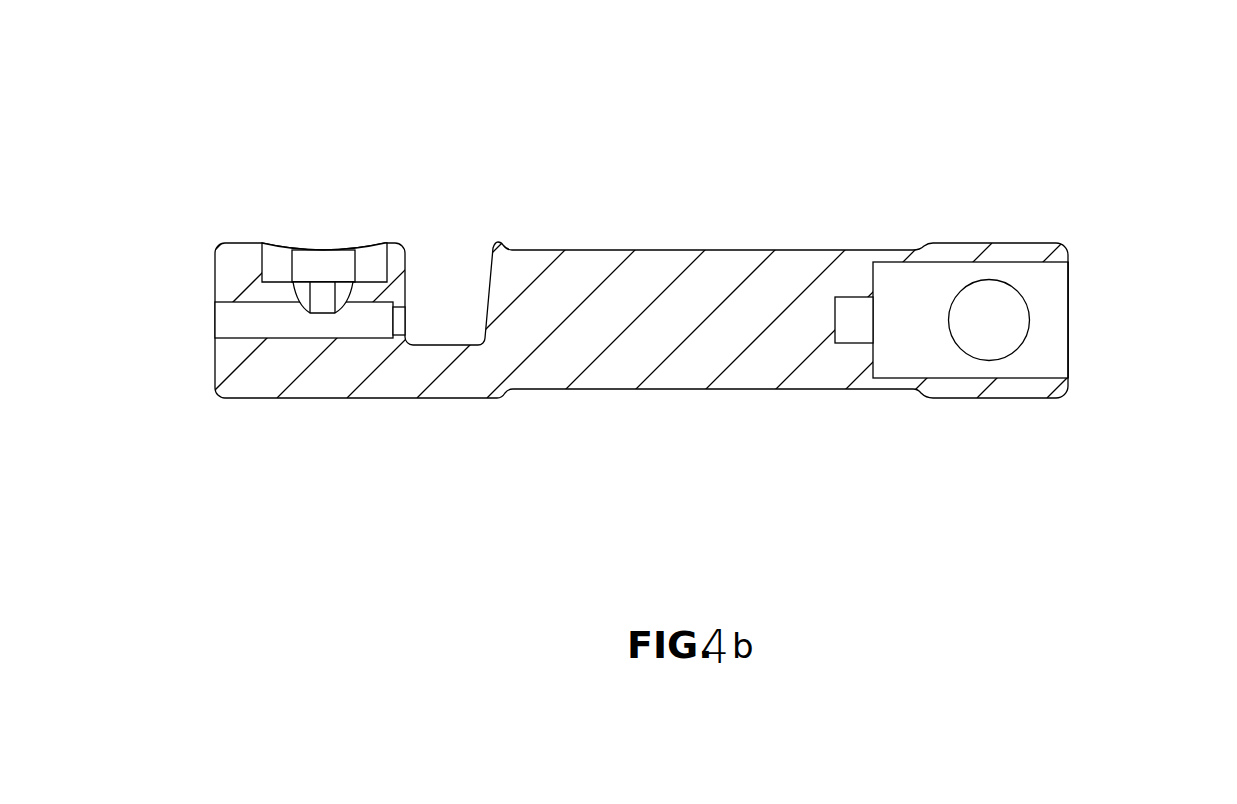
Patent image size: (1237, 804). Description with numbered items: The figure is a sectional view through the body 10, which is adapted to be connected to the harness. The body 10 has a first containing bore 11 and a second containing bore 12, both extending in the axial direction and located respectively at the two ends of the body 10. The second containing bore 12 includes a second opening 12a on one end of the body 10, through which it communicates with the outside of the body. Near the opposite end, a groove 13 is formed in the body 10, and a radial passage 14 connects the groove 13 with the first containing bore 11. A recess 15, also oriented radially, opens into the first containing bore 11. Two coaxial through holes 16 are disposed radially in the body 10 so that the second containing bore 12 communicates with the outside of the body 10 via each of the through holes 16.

The body 10 is at (649, 273).
The first containing bore 11 is at (243, 325).
The second containing bore 12 is at (1027, 345).
The second opening 12a is at (1068, 282).
The groove 13 is at (326, 258).
The passage 14 is at (303, 300).
The recess 15 is at (490, 262).
The through holes 16 is at (967, 358).